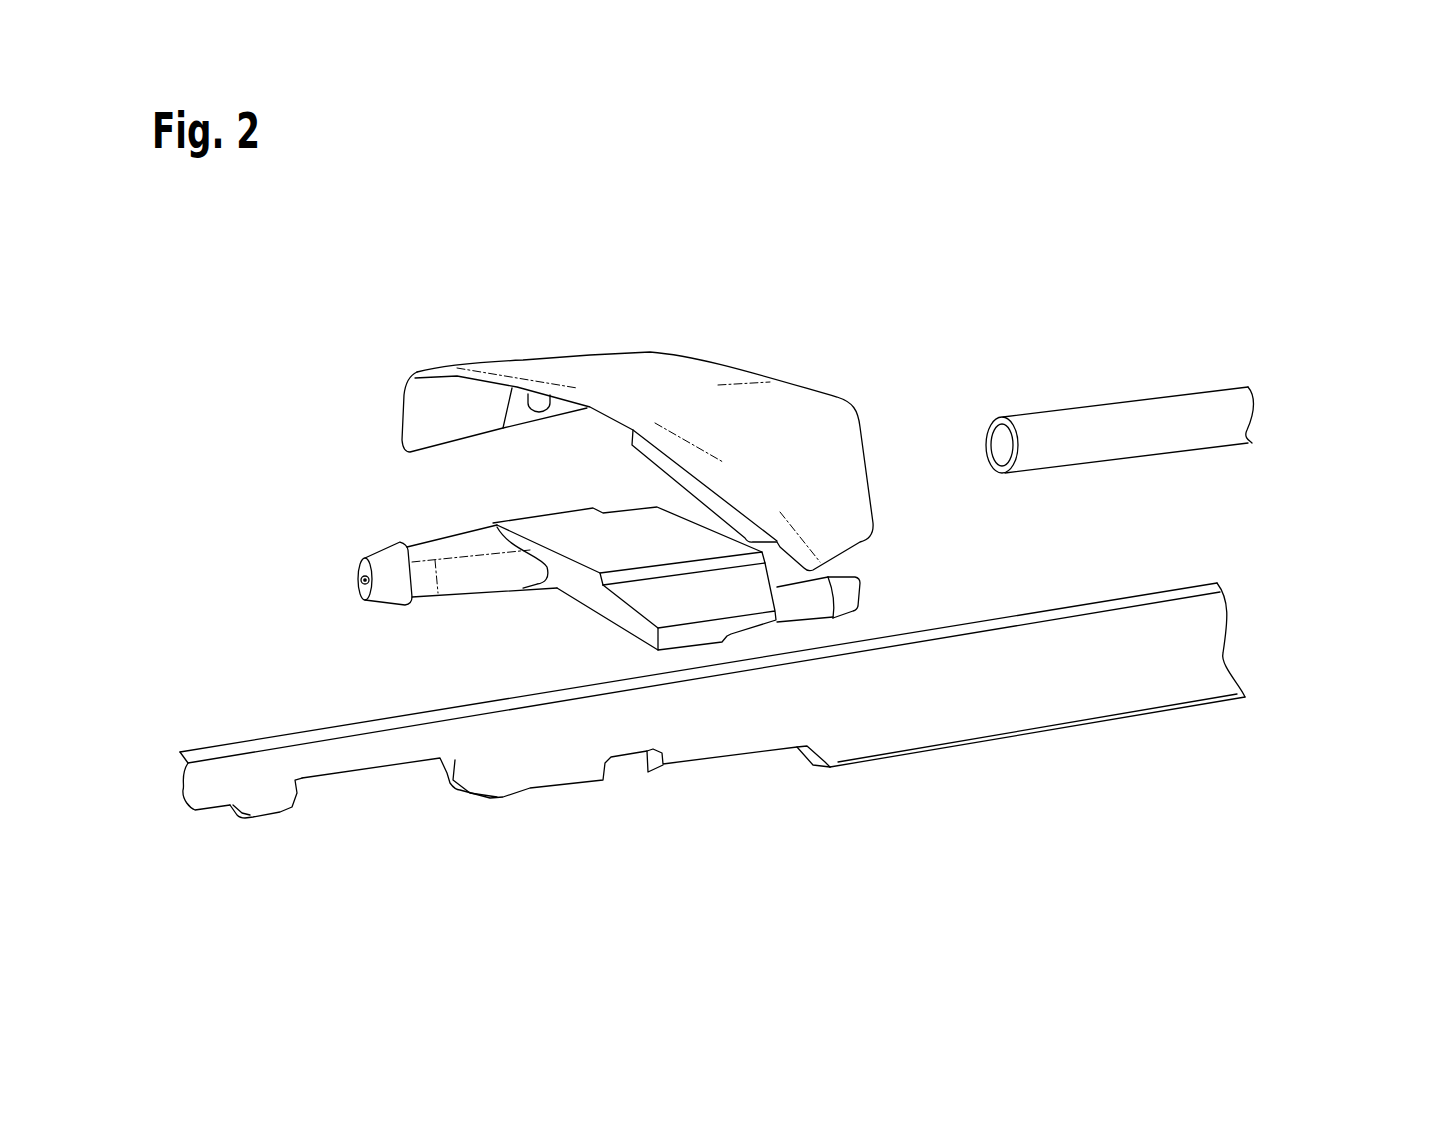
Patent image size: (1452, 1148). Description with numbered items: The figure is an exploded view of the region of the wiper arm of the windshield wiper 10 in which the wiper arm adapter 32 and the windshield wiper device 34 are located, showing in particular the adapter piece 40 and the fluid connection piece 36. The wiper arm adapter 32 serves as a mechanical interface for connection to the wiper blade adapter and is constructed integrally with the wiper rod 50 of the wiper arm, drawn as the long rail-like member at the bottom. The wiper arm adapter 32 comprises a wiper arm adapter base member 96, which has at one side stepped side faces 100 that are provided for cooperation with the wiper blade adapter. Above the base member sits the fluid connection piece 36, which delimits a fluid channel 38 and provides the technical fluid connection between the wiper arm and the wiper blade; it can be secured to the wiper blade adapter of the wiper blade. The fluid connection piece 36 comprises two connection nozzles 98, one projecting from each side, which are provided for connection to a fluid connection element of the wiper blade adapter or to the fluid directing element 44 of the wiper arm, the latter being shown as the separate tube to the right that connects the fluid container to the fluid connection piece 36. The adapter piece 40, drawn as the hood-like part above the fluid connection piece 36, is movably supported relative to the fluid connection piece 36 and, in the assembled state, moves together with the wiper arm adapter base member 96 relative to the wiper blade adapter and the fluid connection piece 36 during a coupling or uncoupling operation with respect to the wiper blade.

The windshield wiper 10 is at (1349, 255).
The wiper arm adapter 32 is at (1233, 235).
The windshield wiper device 34 is at (825, 335).
The fluid connection piece 36 is at (583, 582).
The fluid channel 38 is at (358, 580).
The adapter piece 40 is at (693, 377).
The fluid directing element 44 is at (1103, 427).
The wiper rod 50 is at (1110, 632).
The wiper arm adapter base member 96 is at (720, 727).
The connection nozzles 98 is at (385, 555).
The stepped side faces 100 is at (522, 795).